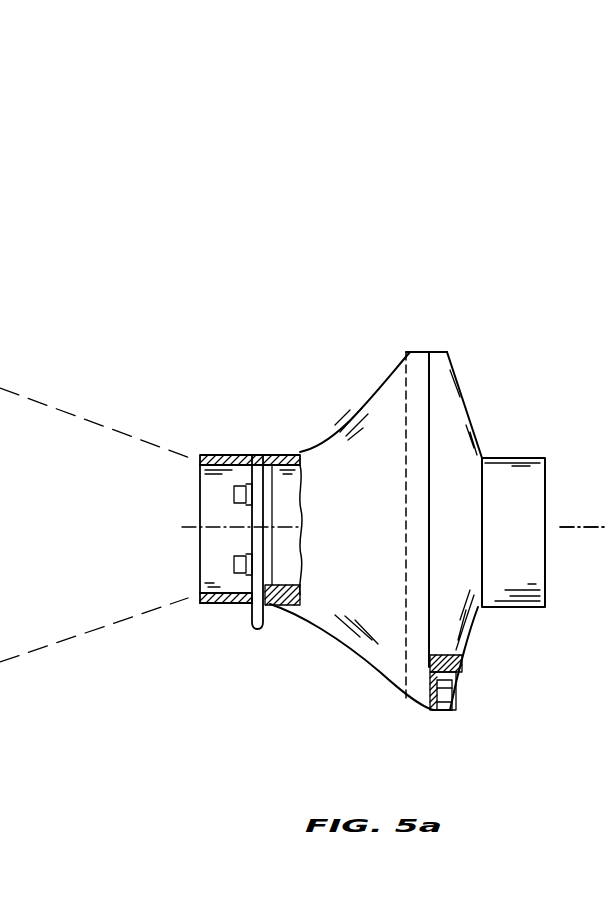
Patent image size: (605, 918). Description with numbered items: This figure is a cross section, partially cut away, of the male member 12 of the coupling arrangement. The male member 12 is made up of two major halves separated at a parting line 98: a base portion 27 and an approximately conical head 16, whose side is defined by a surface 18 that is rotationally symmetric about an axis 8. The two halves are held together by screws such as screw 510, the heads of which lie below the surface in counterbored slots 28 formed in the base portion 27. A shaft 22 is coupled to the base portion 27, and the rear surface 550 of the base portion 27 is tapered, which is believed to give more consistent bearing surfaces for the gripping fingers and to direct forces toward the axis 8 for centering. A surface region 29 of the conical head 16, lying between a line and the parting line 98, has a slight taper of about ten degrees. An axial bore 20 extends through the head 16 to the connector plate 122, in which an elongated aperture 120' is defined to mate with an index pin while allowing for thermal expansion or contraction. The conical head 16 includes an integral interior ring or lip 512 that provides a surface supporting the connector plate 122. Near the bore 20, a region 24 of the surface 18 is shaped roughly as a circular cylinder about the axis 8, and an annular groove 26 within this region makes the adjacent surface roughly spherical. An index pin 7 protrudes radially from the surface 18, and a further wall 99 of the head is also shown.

The male member 12 is at (365, 290).
The axial bore 20 is at (168, 495).
The cylindrical region 24 is at (273, 446).
The connector plate 122 is at (246, 506).
The elongated aperture 120' is at (191, 560).
The index pin 7 is at (255, 637).
The housing end wall 99 is at (201, 602).
The annular groove 26 is at (221, 606).
The conical head 16 is at (322, 418).
The head surface 18 is at (373, 395).
The tapered surface region 29 is at (414, 366).
The parting line 98 is at (437, 362).
The base portion 27 is at (478, 380).
The rear surface 550 is at (466, 415).
The shaft 22 is at (528, 458).
The axis 8 is at (571, 530).
The counterbored slots 28 is at (459, 690).
The screw 510 is at (450, 712).
The interior ring 512 is at (276, 492).